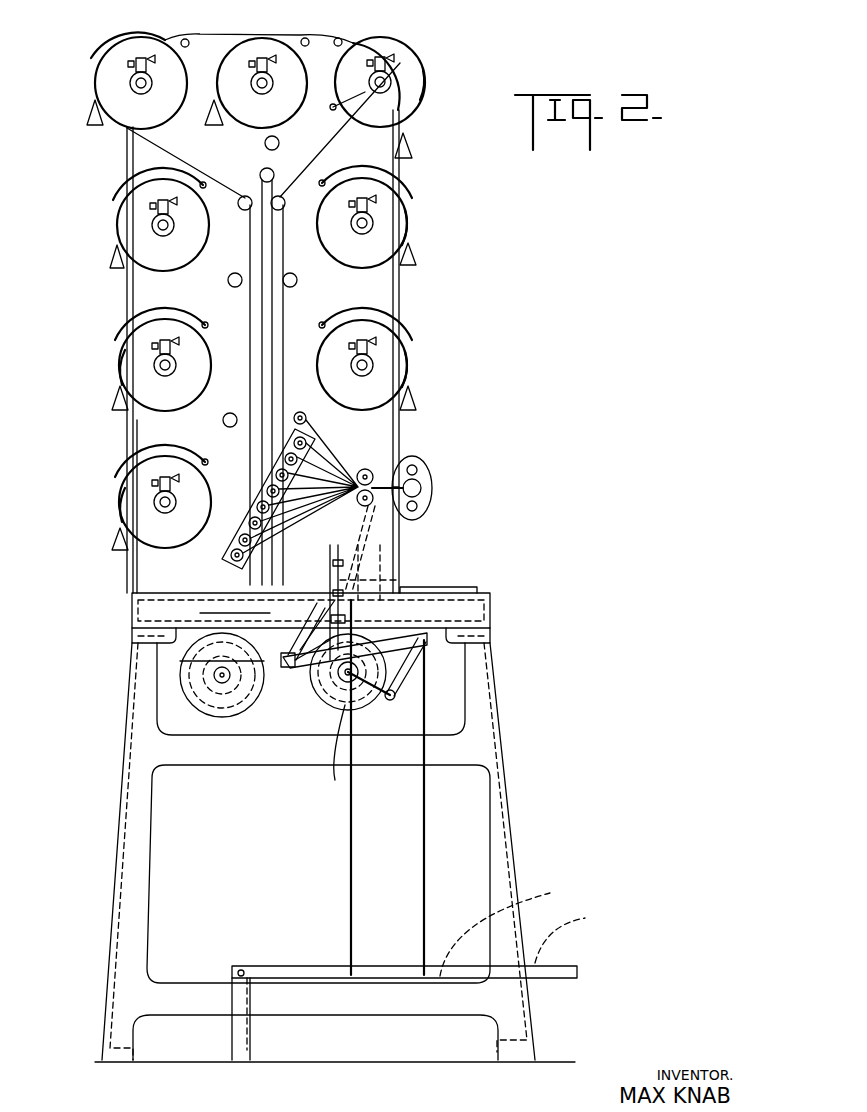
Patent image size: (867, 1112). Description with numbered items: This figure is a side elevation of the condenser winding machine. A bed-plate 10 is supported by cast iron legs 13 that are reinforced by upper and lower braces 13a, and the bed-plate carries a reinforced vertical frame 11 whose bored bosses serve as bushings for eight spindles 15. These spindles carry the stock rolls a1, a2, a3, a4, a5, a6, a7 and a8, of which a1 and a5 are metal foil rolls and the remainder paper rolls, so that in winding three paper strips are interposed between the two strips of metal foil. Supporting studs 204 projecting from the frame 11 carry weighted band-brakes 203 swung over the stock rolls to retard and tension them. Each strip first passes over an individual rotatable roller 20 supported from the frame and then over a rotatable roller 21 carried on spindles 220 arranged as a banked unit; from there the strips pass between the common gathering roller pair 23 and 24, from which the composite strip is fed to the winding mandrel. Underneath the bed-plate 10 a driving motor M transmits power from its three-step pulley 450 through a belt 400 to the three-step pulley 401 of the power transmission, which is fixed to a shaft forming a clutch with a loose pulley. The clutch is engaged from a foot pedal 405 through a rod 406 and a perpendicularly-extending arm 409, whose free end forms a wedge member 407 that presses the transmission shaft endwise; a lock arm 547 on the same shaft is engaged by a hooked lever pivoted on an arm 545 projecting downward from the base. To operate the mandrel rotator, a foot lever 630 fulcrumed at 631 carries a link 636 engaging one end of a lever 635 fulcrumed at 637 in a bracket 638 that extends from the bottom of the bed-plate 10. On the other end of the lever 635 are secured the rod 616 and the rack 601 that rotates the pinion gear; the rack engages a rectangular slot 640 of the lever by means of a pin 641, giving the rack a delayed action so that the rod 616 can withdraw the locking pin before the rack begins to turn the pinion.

The stock roll a1 is at (385, 375).
The stock roll a2 is at (385, 245).
The stock roll a3 is at (410, 65).
The stock roll a4 is at (240, 50).
The stock roll a5 is at (128, 125).
The stock roll a6 is at (128, 208).
The stock roll a7 is at (135, 345).
The stock roll a8 is at (135, 480).
The spindle 15 is at (130, 83).
The supporting stud 204 is at (306, 40).
The weighted band-brake 203 is at (406, 103).
The vertical frame 11 is at (123, 160).
The rotatable roller 20 is at (265, 144).
The spindle 220 is at (238, 544).
The rotatable roller 21 is at (268, 522).
The gathering roller 23 is at (358, 500).
The gathering roller 24 is at (380, 462).
The bed-plate 10 is at (487, 595).
The arm 545 is at (500, 606).
The pin 641 is at (173, 636).
The rod 616 is at (200, 613).
The rectangular slot 640 is at (180, 661).
The driving motor M is at (180, 688).
The three-step pulley 450 is at (190, 705).
The belt 400 is at (300, 695).
The lever 635 is at (445, 637).
The lock arm 547 is at (460, 670).
The arm 409 is at (392, 698).
The wedge member 407 is at (317, 673).
The rack 601 is at (290, 655).
The bracket 638 is at (305, 640).
The leg 13 is at (117, 815).
The brace 13a is at (230, 766).
The rod 406 is at (348, 866).
The three-step pulley 401 is at (370, 740).
The fulcrum 637 is at (335, 722).
The link 636 is at (428, 865).
The foot lever 630 is at (560, 966).
The fulcrum 631 is at (243, 970).
The foot pedal 405 is at (540, 898).